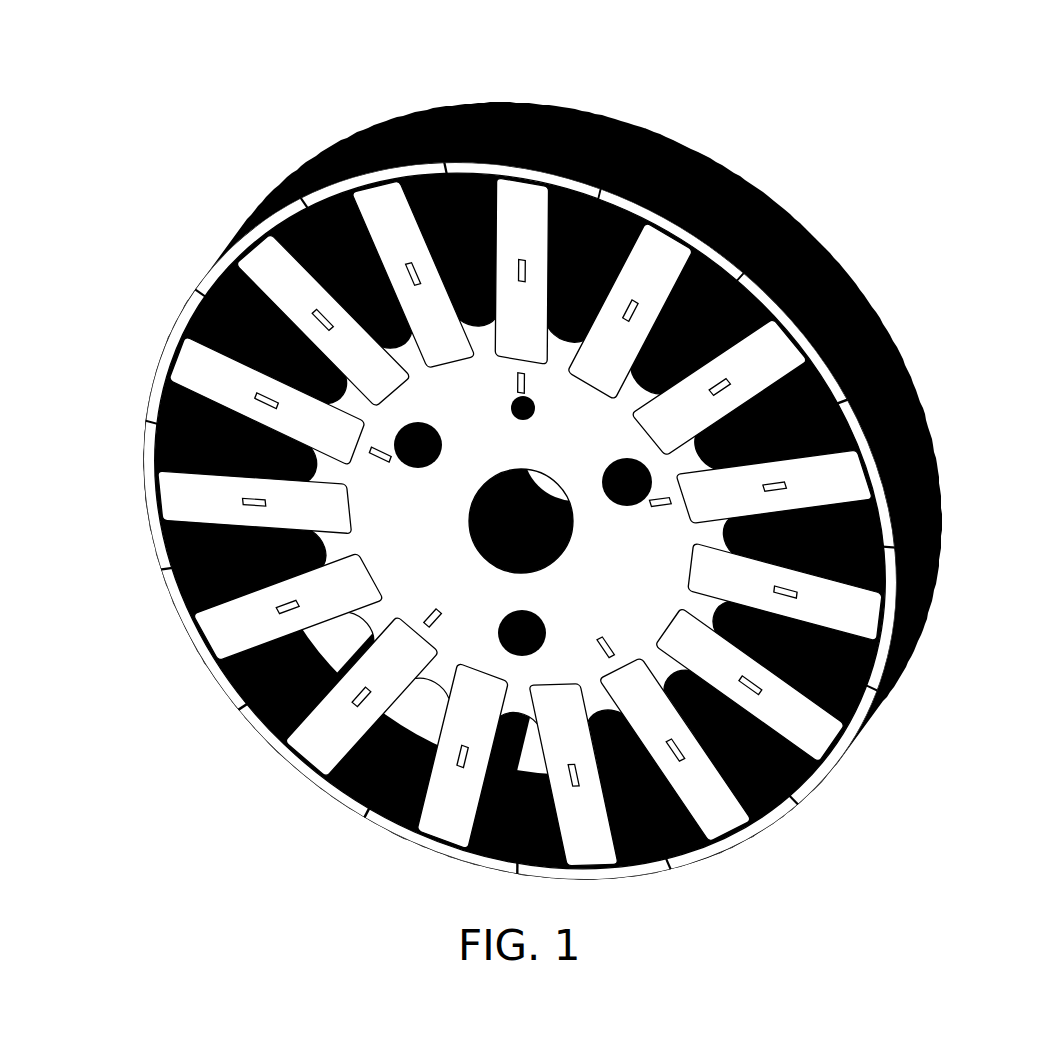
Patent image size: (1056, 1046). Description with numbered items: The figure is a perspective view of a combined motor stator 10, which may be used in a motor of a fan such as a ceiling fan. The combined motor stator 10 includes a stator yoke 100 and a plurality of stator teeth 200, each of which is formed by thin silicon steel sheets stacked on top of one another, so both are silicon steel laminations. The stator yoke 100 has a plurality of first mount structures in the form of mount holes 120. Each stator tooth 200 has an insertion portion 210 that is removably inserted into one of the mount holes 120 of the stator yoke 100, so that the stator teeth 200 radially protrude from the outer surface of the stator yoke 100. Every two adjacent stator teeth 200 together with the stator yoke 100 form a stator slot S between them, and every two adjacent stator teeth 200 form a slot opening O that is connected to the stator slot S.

The combined motor stator 10 is at (571, 479).
The stator yoke 100 is at (571, 499).
The mount hole 120 is at (690, 512).
The stator tooth 200 is at (888, 290).
The insertion portion 210 is at (671, 235).
The stator slot S is at (696, 327).
The slot opening O is at (643, 127).